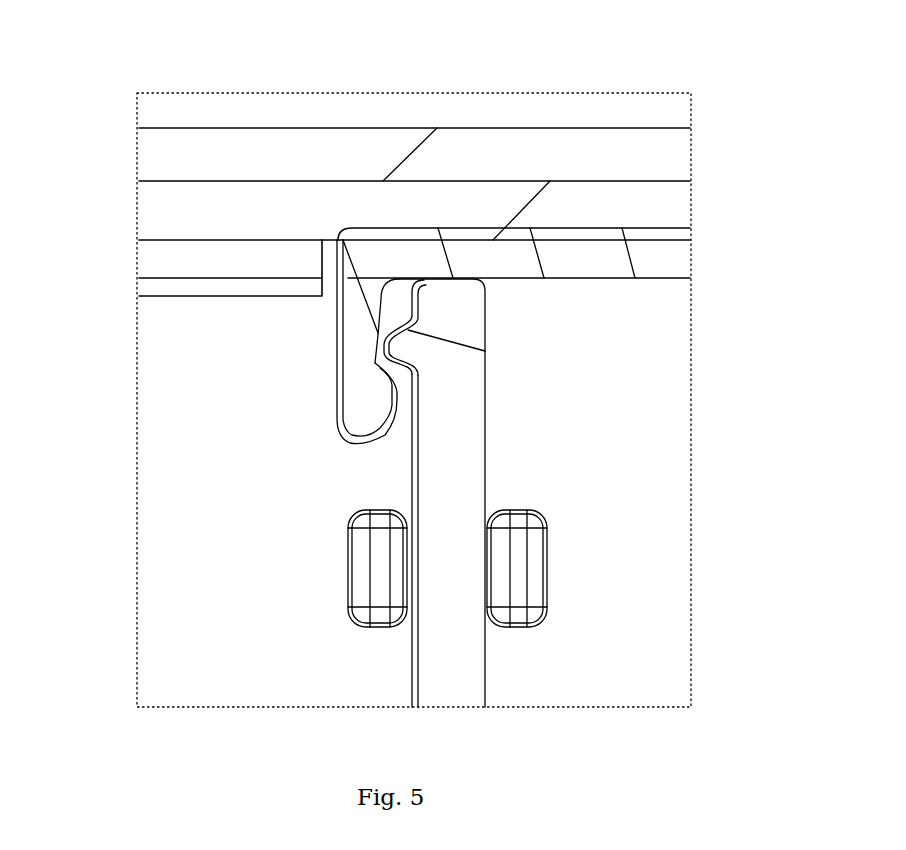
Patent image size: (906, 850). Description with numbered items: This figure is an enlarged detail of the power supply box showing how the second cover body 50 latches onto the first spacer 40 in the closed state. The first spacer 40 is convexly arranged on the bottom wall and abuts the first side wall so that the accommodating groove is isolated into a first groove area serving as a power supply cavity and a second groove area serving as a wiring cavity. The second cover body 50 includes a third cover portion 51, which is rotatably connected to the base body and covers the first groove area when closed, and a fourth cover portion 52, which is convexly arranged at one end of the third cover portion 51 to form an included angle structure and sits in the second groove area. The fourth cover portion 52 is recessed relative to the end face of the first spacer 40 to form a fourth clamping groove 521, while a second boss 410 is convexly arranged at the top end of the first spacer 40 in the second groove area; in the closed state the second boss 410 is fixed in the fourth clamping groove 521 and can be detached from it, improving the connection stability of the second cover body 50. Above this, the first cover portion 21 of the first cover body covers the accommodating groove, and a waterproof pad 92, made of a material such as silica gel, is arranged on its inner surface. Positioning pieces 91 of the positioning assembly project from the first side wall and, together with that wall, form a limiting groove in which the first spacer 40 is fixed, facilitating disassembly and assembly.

The first cover portion 21 is at (548, 148).
The waterproof pad 92 is at (652, 207).
The second cover body 50 is at (297, 53).
The third cover portion 51 is at (462, 248).
The fourth cover portion 52 is at (218, 255).
The fourth clamping groove 521 is at (375, 363).
The first spacer 40 is at (453, 632).
The second boss 410 is at (397, 357).
The positioning piece 91 is at (517, 590).